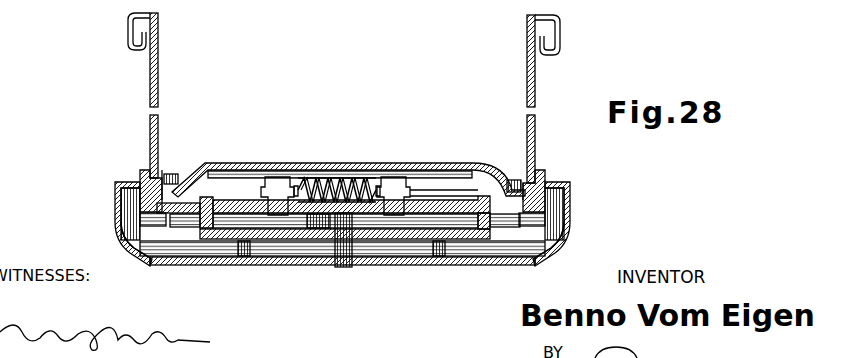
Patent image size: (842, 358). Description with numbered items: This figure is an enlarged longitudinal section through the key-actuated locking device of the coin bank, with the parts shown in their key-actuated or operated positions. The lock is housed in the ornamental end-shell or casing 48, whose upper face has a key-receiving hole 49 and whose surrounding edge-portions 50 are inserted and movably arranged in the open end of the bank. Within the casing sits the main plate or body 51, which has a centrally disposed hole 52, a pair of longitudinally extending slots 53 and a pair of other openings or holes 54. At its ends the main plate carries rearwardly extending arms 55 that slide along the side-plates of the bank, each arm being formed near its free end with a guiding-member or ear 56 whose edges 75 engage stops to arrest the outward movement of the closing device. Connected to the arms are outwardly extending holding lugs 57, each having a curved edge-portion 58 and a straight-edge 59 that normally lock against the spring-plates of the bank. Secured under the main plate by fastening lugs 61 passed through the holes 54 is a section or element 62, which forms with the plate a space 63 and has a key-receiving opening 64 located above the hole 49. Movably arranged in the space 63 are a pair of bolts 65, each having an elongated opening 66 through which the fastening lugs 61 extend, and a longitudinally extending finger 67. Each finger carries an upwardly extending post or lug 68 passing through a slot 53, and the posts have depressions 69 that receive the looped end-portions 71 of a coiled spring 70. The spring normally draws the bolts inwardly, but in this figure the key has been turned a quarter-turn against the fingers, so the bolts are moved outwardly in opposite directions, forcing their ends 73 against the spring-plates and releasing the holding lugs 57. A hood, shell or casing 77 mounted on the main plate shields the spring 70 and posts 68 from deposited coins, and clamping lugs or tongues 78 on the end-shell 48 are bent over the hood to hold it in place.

The end-shell or casing 48 is at (435, 353).
The key-receiving hole 49 is at (348, 243).
The surrounding edge-portions 50 is at (117, 207).
The main plate or body 51 is at (447, 210).
The centrally disposed hole 52 is at (348, 196).
The longitudinally extending slots 53 is at (248, 200).
The openings or holes 54 is at (188, 180).
The rearwardly extending arms 55 is at (151, 117).
The guiding-members or ears 56 is at (132, 14).
The holding lugs 57 is at (140, 175).
The curved edge-portion 58 is at (152, 173).
The straight-edges 59 is at (130, 202).
The fastening lugs 61 is at (208, 200).
The section or element 62 is at (222, 222).
The space 63 is at (413, 242).
The key-receiving opening 64 is at (330, 243).
The bolts 65 is at (147, 268).
The elongated opening 66 is at (183, 256).
The finger 67 is at (300, 241).
The post or lug 68 is at (279, 181).
The depressions 69 is at (264, 164).
The coiled spring 70 is at (330, 180).
The looped end-portions 71 is at (283, 178).
The ends of the bolts 73 is at (121, 219).
The edges of the guiding-members 75 is at (147, 48).
The hood, shell or casing 77 is at (374, 180).
The clamping lugs or tongues 78 is at (172, 174).